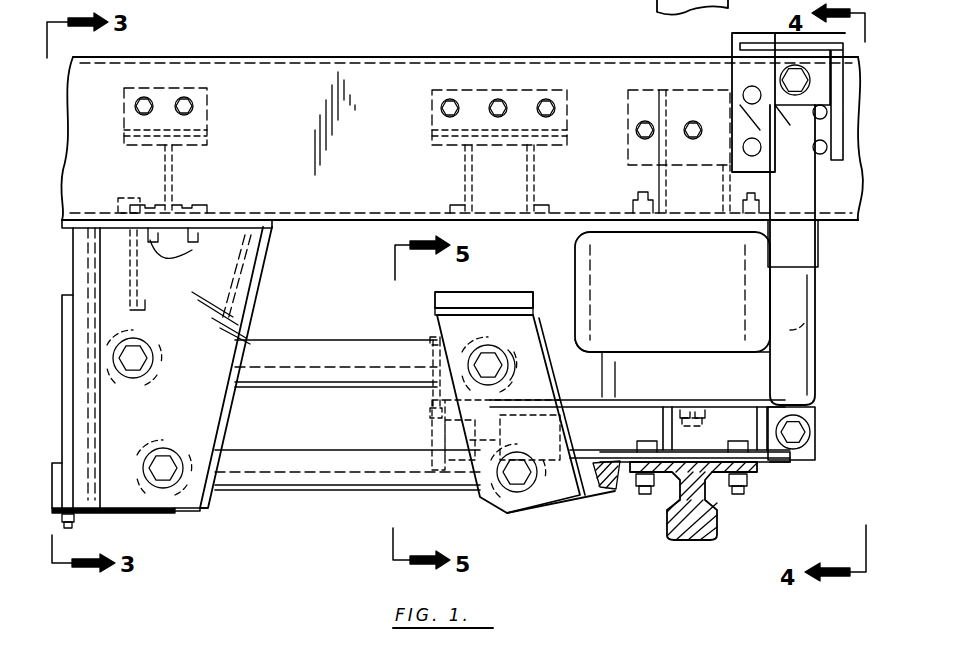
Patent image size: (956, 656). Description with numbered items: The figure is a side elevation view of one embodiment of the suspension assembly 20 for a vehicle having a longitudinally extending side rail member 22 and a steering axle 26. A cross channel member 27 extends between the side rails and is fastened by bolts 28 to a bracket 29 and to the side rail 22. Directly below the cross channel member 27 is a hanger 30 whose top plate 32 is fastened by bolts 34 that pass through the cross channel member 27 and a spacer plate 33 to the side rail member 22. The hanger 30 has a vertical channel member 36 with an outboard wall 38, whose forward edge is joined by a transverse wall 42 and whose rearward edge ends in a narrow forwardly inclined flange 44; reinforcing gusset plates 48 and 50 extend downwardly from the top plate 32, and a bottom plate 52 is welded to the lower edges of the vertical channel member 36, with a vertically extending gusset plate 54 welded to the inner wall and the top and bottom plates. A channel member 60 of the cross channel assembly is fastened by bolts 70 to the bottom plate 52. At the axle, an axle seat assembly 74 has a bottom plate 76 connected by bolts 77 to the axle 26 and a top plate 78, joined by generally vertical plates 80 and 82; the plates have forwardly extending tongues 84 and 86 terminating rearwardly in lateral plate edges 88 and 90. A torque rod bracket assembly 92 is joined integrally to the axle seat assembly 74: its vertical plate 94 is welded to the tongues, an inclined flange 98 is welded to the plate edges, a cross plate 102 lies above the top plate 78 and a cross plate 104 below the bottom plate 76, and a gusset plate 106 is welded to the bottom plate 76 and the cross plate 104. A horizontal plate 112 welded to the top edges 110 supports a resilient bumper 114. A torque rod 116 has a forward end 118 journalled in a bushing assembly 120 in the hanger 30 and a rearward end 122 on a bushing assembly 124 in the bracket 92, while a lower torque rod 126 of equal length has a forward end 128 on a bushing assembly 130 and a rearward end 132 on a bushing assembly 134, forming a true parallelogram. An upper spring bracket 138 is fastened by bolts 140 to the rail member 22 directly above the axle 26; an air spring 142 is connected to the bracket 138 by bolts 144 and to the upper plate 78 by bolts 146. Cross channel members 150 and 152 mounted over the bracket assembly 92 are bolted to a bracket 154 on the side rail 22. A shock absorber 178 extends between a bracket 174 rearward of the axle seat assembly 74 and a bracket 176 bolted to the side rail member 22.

The suspension assembly 20 is at (283, 577).
The side rail member 22 is at (370, 57).
The steering axle 26 is at (690, 541).
The cross channel member 27 is at (176, 173).
The bolts 28 is at (186, 97).
The bracket 29 is at (217, 118).
The hanger 30 is at (236, 415).
The top plate 32 is at (232, 224).
The spacer plate 33 is at (124, 205).
The bolts 34 is at (190, 258).
The vertical channel member 36 is at (250, 308).
The outboard wall 38 is at (248, 280).
The transverse wall 42 is at (72, 260).
The flange 44 is at (222, 432).
The gusset plate 48 is at (250, 250).
The gusset plate 50 is at (151, 275).
The bottom plate 52 is at (163, 515).
The vertically extending gusset plate 54 is at (86, 276).
The channel member 60 is at (60, 465).
The bolts 70 is at (74, 525).
The axle seat assembly 74 is at (776, 470).
The bottom plate 76 is at (780, 463).
The bolts 77 is at (645, 495).
The top plate 78 is at (700, 402).
The vertical plate 80 is at (662, 425).
The vertical plate 82 is at (757, 425).
The tongue 84 is at (612, 496).
The tongue 86 is at (572, 400).
The lateral plate edge 88 is at (568, 449).
The lateral plate edge 90 is at (530, 402).
The torque rod bracket assembly 92 is at (510, 520).
The vertical plate 94 is at (437, 320).
The flange 98 is at (581, 502).
The cross plate 102 is at (558, 347).
The cross plate 104 is at (581, 512).
The gusset plate 106 is at (603, 490).
The top edges 110 is at (526, 312).
The horizontal plate 112 is at (508, 306).
The resilient bumper 114 is at (485, 300).
The torque rod 116 is at (322, 352).
The forward end 118 is at (136, 390).
The bushing assembly 120 is at (148, 348).
The rearward end 122 is at (512, 350).
The bushing assembly 124 is at (481, 364).
The lower torque rod 126 is at (320, 480).
The forward end 128 is at (124, 455).
The bushing assembly 130 is at (178, 490).
The rearward end 132 is at (500, 521).
The bushing assembly 134 is at (483, 500).
The upper spring bracket 138 is at (628, 88).
The bolts 140 is at (695, 140).
The air spring 142 is at (702, 317).
The bolts 144 is at (633, 206).
The bolts 146 is at (678, 400).
The cross channel member 150 is at (465, 165).
The cross channel member 152 is at (535, 170).
The bracket 154 is at (470, 92).
The bracket 174 is at (816, 447).
The bracket 176 is at (828, 90).
The shock absorber 178 is at (806, 290).